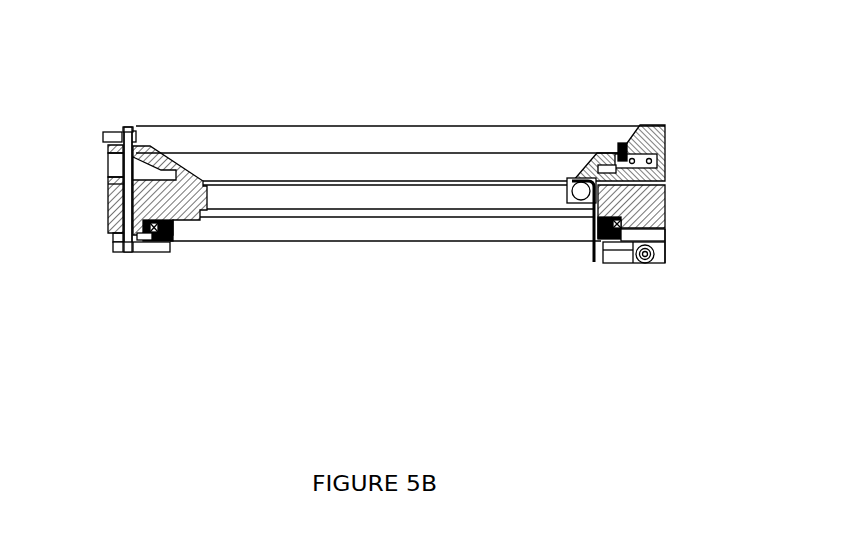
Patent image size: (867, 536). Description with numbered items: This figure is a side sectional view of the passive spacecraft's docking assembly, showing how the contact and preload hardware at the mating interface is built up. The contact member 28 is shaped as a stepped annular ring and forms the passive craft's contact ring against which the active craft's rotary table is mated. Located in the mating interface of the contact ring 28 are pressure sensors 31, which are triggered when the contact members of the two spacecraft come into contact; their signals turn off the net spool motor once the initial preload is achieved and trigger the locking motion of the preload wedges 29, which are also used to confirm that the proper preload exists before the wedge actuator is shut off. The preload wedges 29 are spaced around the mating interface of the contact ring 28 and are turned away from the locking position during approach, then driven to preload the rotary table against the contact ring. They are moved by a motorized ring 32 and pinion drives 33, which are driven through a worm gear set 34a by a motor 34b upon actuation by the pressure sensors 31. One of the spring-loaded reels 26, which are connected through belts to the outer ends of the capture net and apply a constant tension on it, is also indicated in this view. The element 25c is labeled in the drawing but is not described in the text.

The contact member 28 is at (156, 142).
The preload wedges 29 is at (106, 131).
The pressure sensors 31 is at (620, 142).
The motorized ring 32 is at (172, 242).
The pinion drives 33 is at (133, 257).
The O-ring 25c is at (571, 197).
The spring-loaded reels 26 is at (591, 272).
The worm gear set 34a is at (624, 258).
The motor 34b is at (666, 242).